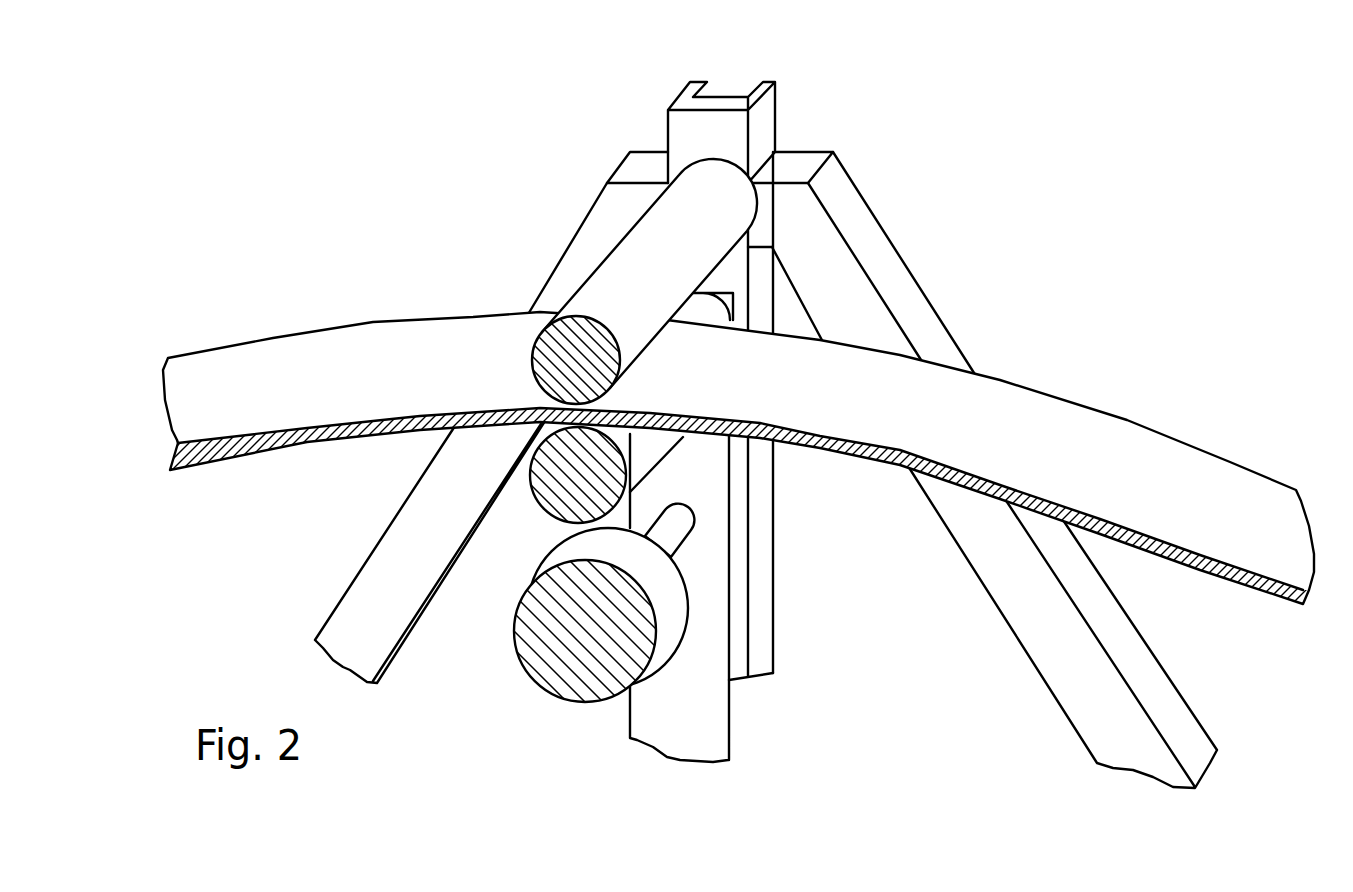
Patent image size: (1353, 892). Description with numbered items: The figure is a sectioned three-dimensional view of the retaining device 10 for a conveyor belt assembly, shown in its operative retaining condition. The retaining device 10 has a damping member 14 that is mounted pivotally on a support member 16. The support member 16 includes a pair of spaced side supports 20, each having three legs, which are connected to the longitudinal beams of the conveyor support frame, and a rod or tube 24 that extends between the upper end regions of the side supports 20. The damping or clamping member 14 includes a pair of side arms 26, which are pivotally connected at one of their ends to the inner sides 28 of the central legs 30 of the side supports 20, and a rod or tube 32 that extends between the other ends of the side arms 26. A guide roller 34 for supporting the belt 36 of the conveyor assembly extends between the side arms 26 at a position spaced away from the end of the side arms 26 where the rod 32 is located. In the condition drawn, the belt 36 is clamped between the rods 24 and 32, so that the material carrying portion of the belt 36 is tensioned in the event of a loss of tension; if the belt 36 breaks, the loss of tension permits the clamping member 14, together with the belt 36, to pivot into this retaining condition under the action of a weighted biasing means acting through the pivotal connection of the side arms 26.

The retaining device 10 is at (973, 188).
The damping member 14 is at (597, 725).
The support member 16 is at (975, 310).
The side supports 20 is at (868, 193).
The rod or tube 24 is at (622, 237).
The side arms 26 is at (675, 727).
The inner sides 28 is at (737, 658).
The central legs 30 is at (763, 510).
The rod or tube 32 is at (542, 506).
The guide roller 34 is at (512, 635).
The belt 36 is at (1143, 445).